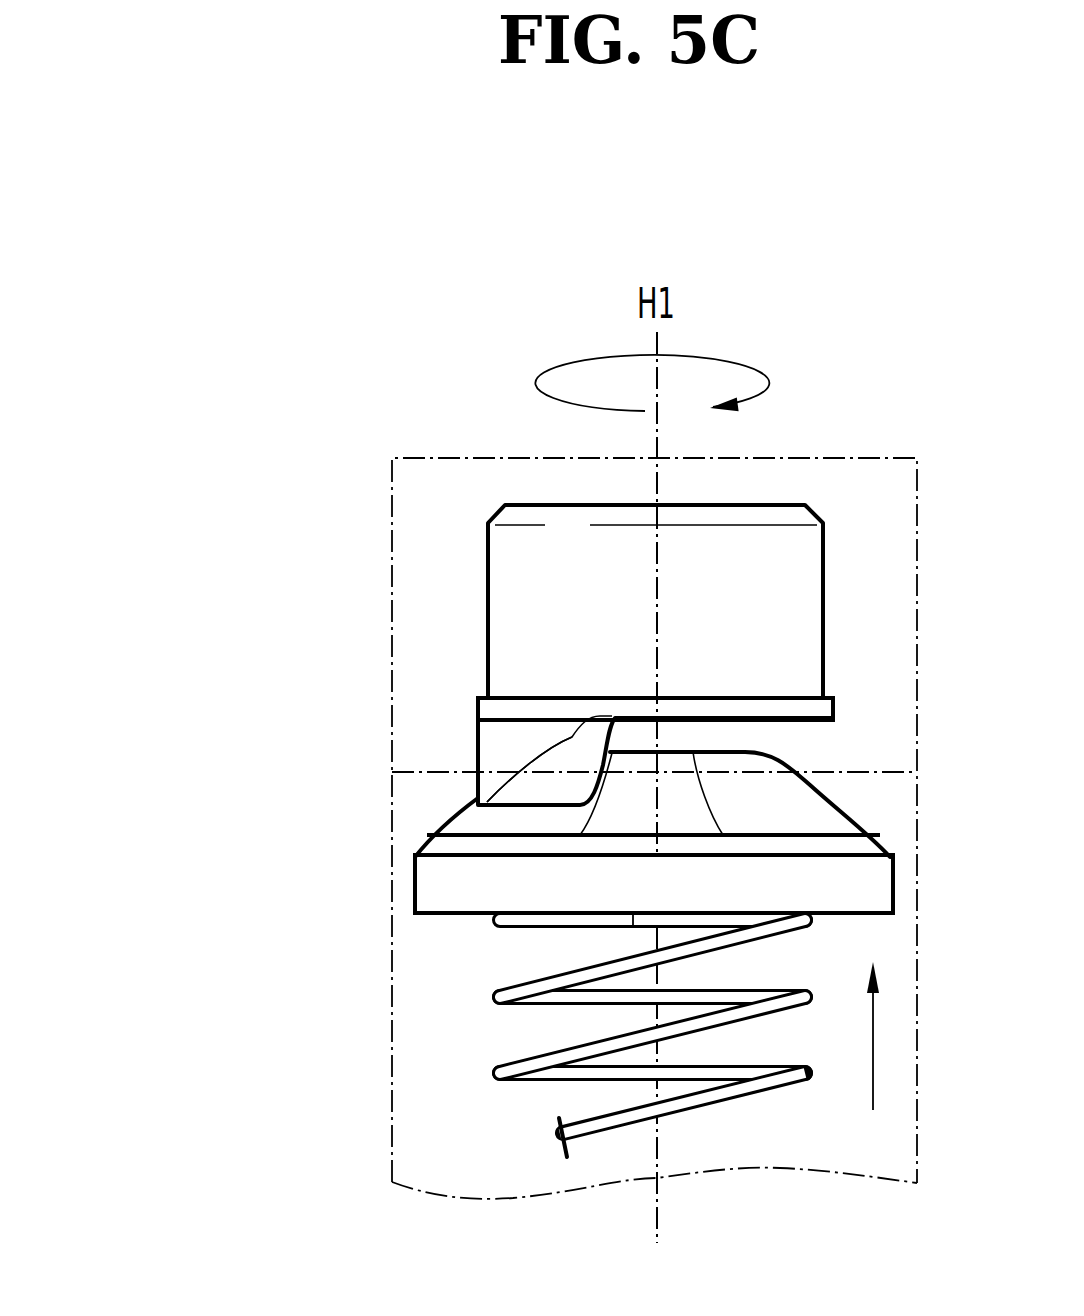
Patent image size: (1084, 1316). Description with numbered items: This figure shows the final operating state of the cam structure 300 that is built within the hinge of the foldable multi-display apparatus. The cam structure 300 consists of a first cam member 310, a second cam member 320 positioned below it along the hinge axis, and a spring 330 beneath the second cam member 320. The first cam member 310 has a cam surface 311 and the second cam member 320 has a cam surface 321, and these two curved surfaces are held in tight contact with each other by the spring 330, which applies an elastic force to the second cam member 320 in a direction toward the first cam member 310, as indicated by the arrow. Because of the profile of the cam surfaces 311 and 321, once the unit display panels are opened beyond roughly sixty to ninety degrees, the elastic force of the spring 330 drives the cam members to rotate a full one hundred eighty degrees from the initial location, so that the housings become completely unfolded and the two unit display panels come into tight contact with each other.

The cam structure 300 is at (242, 708).
The first cam member 310 is at (498, 606).
The cam surface 311 is at (572, 738).
The second cam member 320 is at (440, 893).
The cam surface 321 is at (487, 802).
The spring 330 is at (517, 1068).